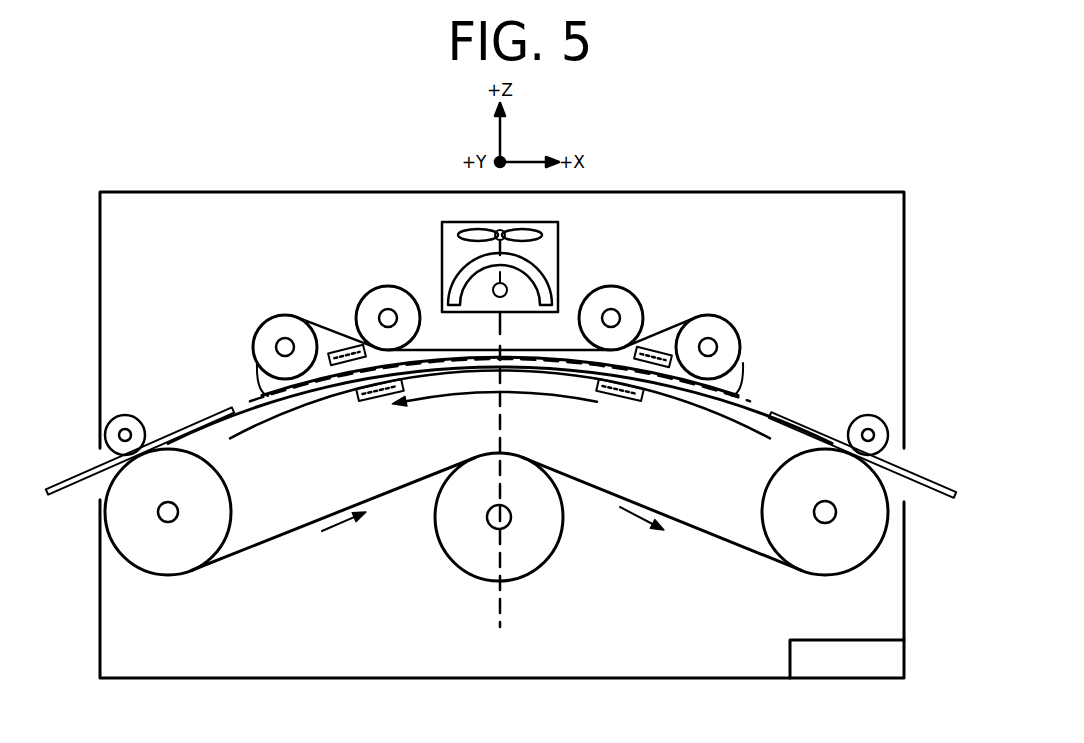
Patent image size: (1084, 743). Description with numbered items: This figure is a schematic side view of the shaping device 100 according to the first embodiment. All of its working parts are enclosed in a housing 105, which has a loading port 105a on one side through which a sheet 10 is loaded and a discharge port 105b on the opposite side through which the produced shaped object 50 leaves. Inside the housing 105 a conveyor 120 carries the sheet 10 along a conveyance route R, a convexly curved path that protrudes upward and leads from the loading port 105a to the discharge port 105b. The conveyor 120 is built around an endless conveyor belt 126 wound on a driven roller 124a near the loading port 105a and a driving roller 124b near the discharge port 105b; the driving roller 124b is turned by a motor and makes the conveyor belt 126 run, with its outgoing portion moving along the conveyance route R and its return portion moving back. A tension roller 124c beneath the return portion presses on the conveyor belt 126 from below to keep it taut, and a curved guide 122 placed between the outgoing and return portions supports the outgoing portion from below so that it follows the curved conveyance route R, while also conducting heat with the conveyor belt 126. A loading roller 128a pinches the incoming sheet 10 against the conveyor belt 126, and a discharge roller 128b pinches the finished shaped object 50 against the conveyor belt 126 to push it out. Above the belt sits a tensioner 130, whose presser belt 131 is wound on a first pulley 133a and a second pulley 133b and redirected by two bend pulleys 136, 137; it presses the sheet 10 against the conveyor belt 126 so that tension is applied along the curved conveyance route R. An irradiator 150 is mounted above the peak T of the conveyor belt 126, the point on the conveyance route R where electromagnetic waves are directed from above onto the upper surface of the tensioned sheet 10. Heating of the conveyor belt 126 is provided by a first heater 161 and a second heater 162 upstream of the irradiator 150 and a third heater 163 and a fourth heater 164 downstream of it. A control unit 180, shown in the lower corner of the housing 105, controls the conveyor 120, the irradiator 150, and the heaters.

The shaping device 100 is at (797, 141).
The housing 105 is at (190, 192).
The loading port 105a is at (912, 495).
The discharge port 105b is at (90, 450).
The sheet 10 is at (928, 478).
The shaped object 50 is at (88, 493).
The conveyor 120 is at (270, 574).
The guide 122 is at (236, 444).
The driven roller 124a is at (840, 568).
The driving roller 124b is at (165, 568).
The tension roller 124c is at (528, 562).
The conveyor belt 126 is at (762, 408).
The loading roller 128a is at (866, 414).
The discharge roller 128b is at (126, 414).
The tensioner 130 is at (765, 326).
The presser belt 131 is at (328, 326).
The first pulley 133a is at (708, 322).
The second pulley 133b is at (273, 336).
The bend pulley 136 is at (612, 294).
The bend pulley 137 is at (388, 292).
The irradiator 150 is at (558, 240).
The first heater 161 is at (622, 398).
The second heater 162 is at (656, 348).
The third heater 163 is at (376, 398).
The fourth heater 164 is at (344, 346).
The control unit 180 is at (790, 645).
The conveyance route R is at (262, 400).
The peak T is at (500, 368).